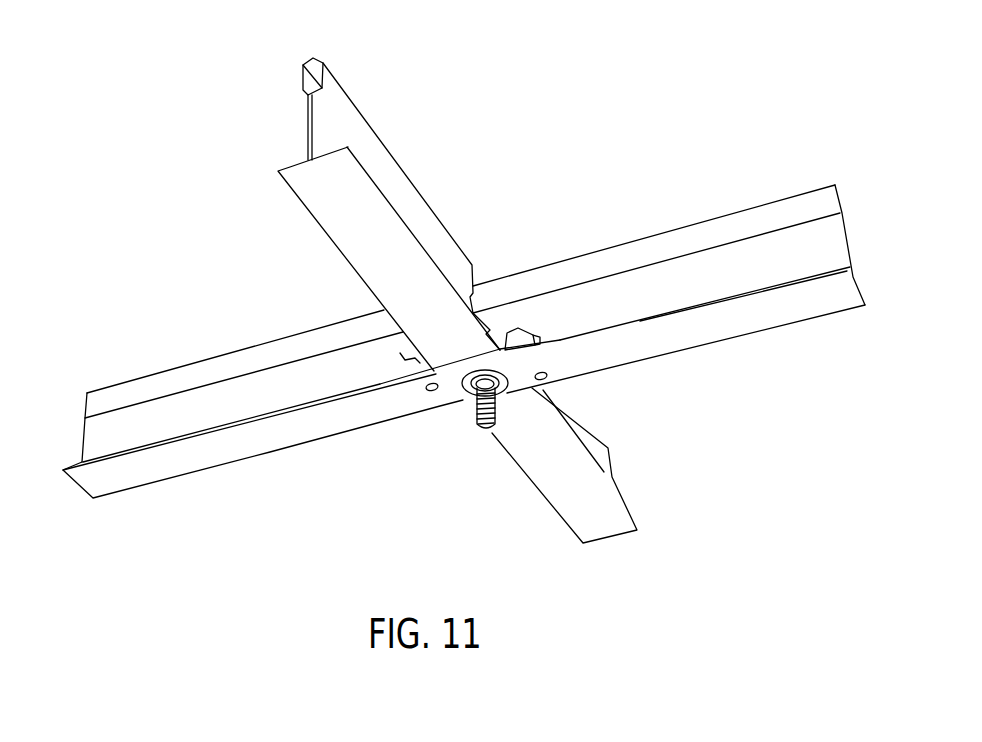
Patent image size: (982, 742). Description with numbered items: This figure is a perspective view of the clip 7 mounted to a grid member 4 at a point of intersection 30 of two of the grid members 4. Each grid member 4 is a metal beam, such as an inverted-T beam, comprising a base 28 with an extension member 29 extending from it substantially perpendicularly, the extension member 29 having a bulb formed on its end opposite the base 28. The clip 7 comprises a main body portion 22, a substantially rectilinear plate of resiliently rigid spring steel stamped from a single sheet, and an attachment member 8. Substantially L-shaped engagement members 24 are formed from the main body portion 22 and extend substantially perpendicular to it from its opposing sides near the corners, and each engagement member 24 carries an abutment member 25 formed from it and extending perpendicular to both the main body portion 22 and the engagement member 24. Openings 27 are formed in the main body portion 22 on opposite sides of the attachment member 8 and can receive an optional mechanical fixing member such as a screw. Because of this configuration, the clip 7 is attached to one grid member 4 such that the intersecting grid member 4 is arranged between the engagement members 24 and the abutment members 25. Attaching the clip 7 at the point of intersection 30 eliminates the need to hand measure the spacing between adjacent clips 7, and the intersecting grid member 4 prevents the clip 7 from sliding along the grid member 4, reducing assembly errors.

The grid member 4 is at (307, 127).
The clip 7 is at (510, 370).
The attachment member 8 is at (487, 426).
The main body portion 22 is at (443, 408).
The engagement member 24 is at (417, 357).
The abutment member 25 is at (368, 386).
The opening 27 is at (437, 391).
The base 28 is at (340, 93).
The extension member 29 is at (318, 205).
The point of intersection 30 is at (500, 260).